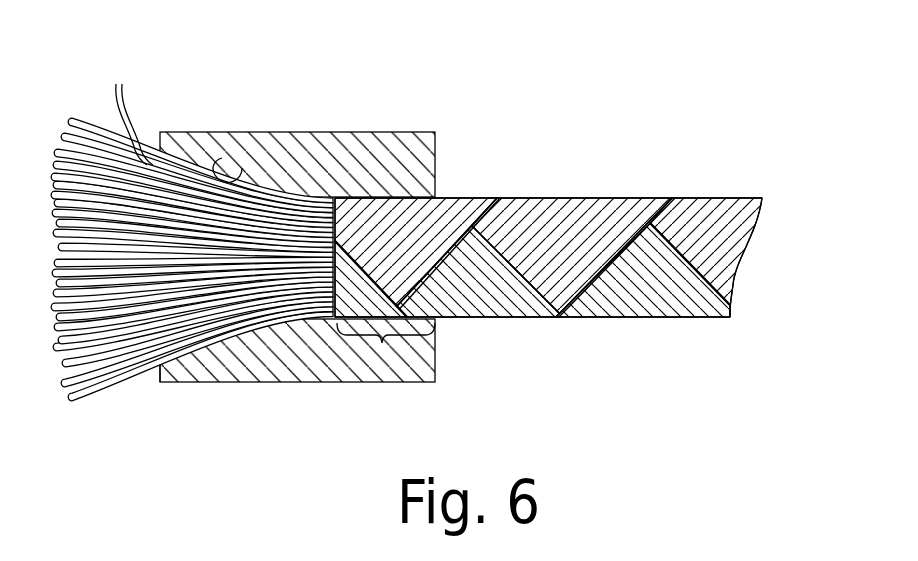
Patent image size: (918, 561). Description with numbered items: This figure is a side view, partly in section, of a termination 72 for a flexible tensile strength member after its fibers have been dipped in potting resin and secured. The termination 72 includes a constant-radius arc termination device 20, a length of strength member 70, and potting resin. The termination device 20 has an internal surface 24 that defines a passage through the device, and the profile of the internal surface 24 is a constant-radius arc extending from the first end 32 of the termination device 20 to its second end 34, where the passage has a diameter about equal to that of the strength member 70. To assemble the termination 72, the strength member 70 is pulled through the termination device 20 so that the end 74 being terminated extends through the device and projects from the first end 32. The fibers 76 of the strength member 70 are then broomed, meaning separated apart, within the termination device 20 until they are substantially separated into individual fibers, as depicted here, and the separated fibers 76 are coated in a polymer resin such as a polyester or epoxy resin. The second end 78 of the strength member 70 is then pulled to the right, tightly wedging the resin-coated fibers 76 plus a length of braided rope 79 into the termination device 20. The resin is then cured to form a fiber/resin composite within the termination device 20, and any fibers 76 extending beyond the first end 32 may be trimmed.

The termination device 20 is at (238, 382).
The internal surface 24 is at (242, 168).
The first end 32 is at (160, 373).
The second end 34 is at (437, 172).
The strength member 70 is at (548, 222).
The termination 72 is at (372, 86).
The end 74 is at (84, 121).
The fibers 76 is at (131, 110).
The second end 78 is at (723, 199).
The braided rope 79 is at (382, 343).